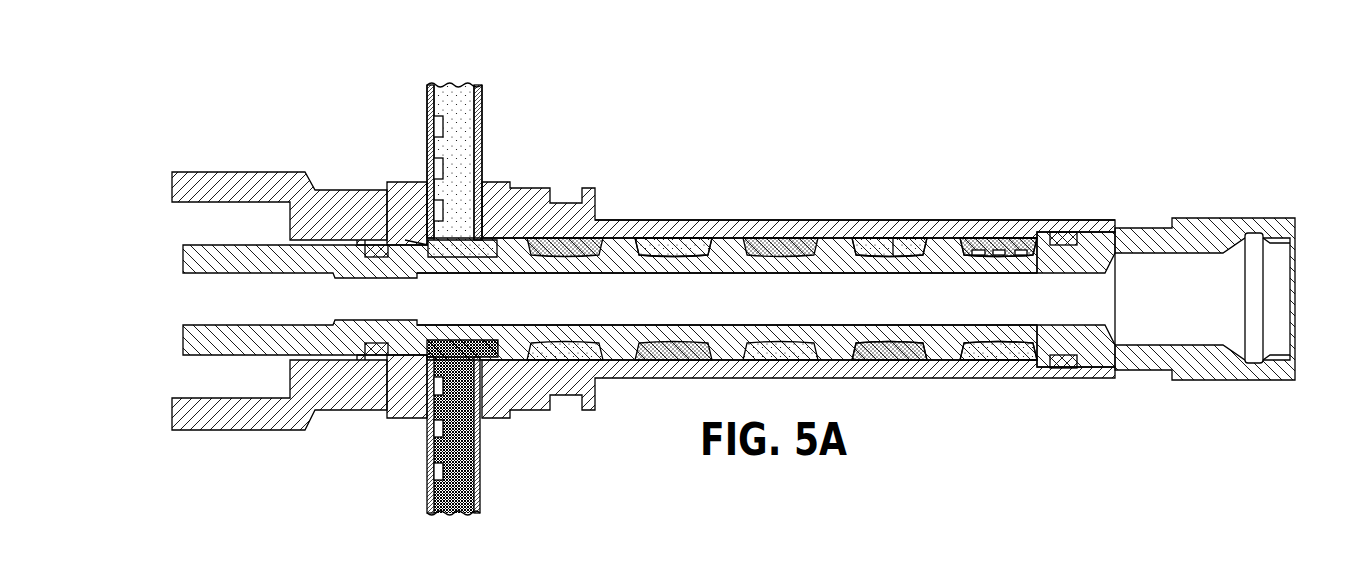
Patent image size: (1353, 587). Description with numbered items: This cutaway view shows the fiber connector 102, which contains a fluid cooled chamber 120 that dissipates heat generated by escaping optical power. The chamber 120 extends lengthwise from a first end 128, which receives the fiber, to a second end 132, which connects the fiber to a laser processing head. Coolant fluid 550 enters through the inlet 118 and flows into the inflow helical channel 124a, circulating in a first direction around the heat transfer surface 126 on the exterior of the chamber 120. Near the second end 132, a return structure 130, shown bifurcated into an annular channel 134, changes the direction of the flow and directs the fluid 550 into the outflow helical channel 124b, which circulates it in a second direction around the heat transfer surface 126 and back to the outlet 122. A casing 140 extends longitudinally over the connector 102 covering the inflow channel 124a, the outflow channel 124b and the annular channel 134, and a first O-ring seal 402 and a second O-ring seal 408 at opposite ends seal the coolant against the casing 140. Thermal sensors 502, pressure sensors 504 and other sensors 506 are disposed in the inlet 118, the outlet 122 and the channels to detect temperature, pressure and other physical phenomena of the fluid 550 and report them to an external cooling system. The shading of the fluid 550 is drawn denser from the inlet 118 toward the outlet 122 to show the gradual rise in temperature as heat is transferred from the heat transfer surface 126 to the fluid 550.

The connector 102 is at (936, 143).
The inlet 118 is at (458, 85).
The fluid cooled chamber 120 is at (1072, 314).
The outlet 122 is at (451, 513).
The inflow helical channel 124a is at (492, 257).
The outflow helical channel 124b is at (444, 340).
The heat transfer surface 126 is at (893, 243).
The first end 128 is at (241, 172).
The return structure 130 is at (1000, 361).
The second end 132 is at (1232, 218).
The annular channel 134 is at (999, 343).
The casing 140 is at (793, 220).
The first O-ring seal 402 is at (1074, 369).
The second O-ring seal 408 is at (383, 343).
The thermal sensor 502 is at (434, 168).
The pressure sensor 504 is at (434, 210).
The other sensor 506 is at (434, 126).
The fluid 550 is at (468, 159).